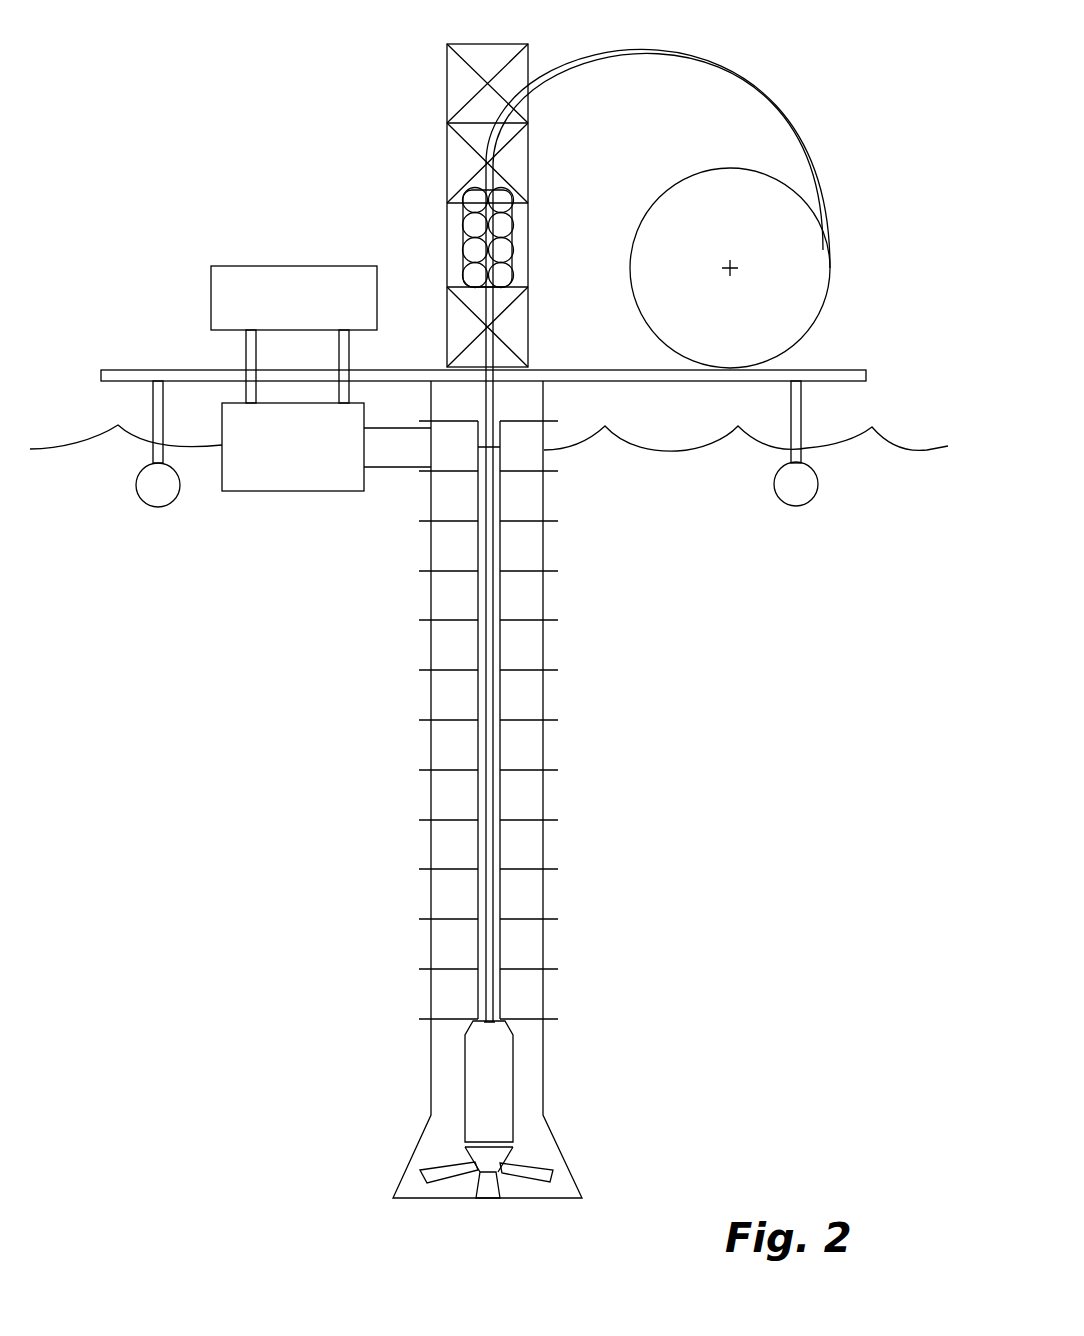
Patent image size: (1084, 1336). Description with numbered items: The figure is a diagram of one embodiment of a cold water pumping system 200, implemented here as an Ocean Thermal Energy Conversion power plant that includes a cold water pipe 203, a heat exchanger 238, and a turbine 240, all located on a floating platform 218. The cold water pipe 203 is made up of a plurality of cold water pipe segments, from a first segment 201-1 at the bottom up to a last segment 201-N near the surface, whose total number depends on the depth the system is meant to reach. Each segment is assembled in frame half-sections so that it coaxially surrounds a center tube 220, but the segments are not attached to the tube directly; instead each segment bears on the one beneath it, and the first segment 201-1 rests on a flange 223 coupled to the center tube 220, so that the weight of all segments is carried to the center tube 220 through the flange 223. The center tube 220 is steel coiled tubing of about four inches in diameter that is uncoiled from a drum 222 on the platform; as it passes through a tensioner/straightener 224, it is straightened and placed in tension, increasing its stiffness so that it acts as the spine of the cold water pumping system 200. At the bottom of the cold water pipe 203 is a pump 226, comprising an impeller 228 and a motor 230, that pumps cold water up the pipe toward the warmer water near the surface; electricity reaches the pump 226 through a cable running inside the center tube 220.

The cold water pumping system 200 is at (337, 121).
The floating platform 218 is at (866, 366).
The center tube 220 is at (797, 108).
The drum 222 is at (830, 289).
The tensioner/straightener 224 is at (462, 238).
The cold water pipe segment 201-N is at (544, 460).
The first cold water pipe segment 201-1 is at (544, 998).
The cold water pipe 203 is at (417, 745).
The flange 223 is at (544, 1067).
The pump 226 is at (457, 1125).
The impeller 228 is at (488, 1199).
The motor 230 is at (478, 1052).
The heat exchanger 238 is at (310, 490).
The turbine 240 is at (310, 329).